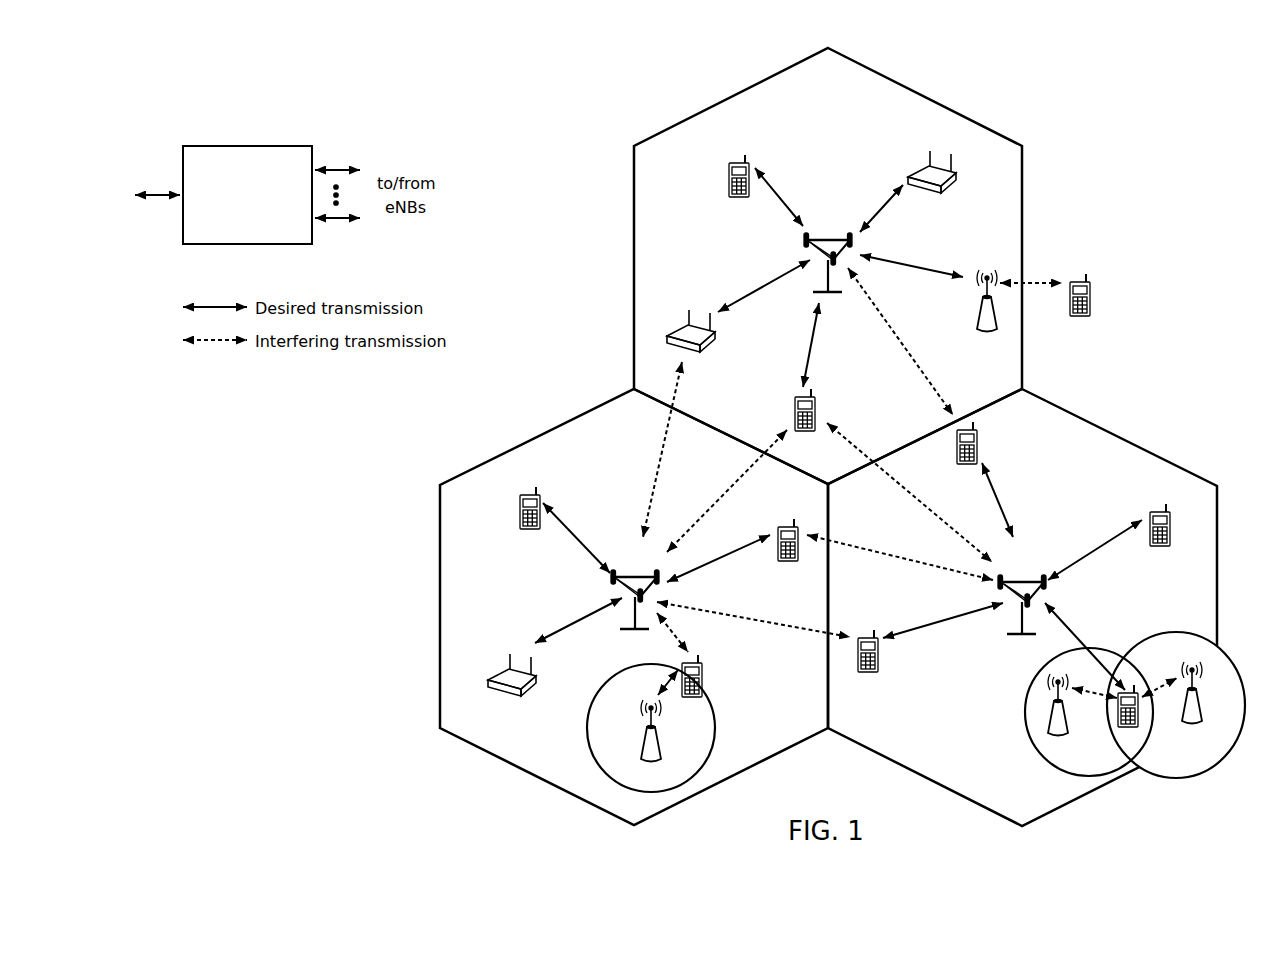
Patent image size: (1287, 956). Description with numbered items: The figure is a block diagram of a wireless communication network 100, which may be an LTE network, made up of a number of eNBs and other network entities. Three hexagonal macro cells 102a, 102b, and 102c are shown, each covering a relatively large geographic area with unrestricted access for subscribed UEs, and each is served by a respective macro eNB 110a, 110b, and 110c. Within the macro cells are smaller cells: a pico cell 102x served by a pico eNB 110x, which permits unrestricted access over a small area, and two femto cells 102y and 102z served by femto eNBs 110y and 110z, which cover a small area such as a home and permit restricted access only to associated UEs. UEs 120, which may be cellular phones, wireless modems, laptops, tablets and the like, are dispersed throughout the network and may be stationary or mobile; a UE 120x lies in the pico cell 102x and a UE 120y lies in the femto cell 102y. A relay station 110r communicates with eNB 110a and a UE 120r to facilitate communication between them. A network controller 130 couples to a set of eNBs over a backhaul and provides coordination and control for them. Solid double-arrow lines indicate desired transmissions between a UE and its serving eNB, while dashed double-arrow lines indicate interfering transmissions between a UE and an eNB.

The wireless communication network 100 is at (1160, 108).
The macro cell 102a is at (930, 100).
The macro cell 102b is at (532, 439).
The macro cell 102c is at (1121, 438).
The pico cell 102x is at (606, 678).
The femto cell 102y is at (1032, 678).
The femto cell 102z is at (1175, 633).
The macro eNB 110a is at (830, 239).
The macro eNB 110b is at (636, 577).
The macro eNB 110c is at (1026, 582).
The relay station 110r is at (978, 313).
The pico eNB 110x is at (661, 750).
The femto eNB 110y is at (1068, 726).
The femto eNB 110z is at (1202, 714).
The user equipment 120 is at (729, 168).
The UE 120r is at (1088, 312).
The UE 120x is at (701, 678).
The UE 120y is at (1118, 729).
The network controller 130 is at (248, 146).